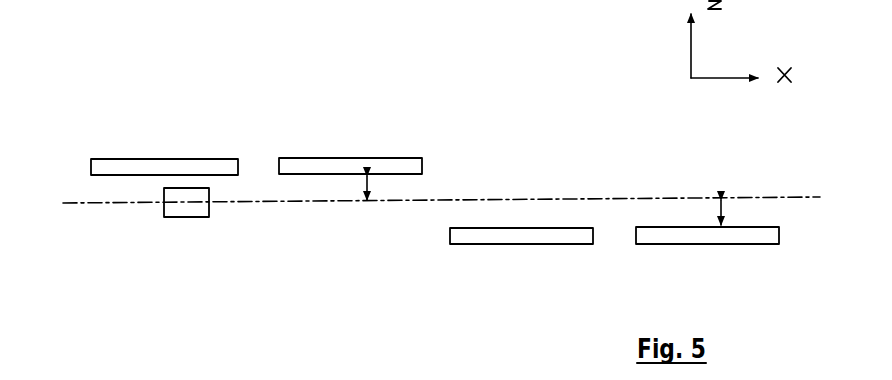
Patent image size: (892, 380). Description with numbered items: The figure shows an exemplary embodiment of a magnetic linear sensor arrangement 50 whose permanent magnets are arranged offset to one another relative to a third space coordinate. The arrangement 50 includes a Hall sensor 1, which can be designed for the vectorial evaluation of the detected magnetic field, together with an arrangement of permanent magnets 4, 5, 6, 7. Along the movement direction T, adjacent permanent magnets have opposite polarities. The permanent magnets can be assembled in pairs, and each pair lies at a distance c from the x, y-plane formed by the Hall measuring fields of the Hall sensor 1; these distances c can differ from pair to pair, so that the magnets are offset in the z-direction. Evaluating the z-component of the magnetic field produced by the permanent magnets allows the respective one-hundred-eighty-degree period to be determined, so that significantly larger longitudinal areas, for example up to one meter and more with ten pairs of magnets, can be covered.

The Hall sensor 1 is at (195, 202).
The permanent magnet 4 is at (123, 160).
The permanent magnet 5 is at (337, 158).
The permanent magnet 6 is at (523, 243).
The permanent magnet 7 is at (652, 243).
The magnetic linear sensor arrangement 50 is at (516, 101).
The movement direction T is at (547, 198).
The distance c is at (787, 164).